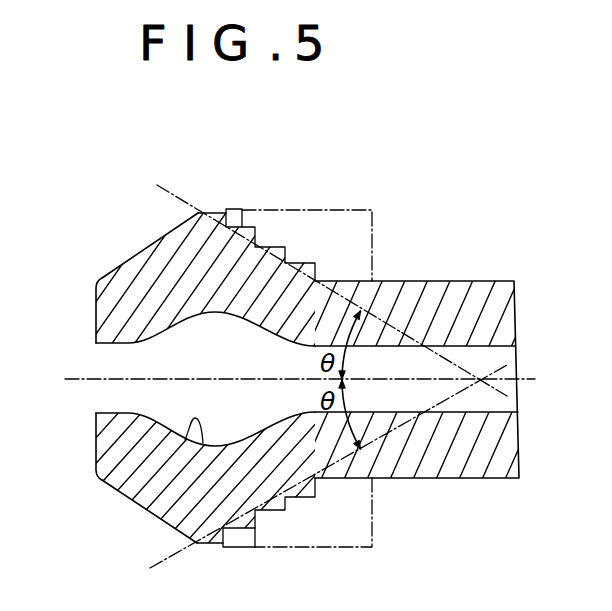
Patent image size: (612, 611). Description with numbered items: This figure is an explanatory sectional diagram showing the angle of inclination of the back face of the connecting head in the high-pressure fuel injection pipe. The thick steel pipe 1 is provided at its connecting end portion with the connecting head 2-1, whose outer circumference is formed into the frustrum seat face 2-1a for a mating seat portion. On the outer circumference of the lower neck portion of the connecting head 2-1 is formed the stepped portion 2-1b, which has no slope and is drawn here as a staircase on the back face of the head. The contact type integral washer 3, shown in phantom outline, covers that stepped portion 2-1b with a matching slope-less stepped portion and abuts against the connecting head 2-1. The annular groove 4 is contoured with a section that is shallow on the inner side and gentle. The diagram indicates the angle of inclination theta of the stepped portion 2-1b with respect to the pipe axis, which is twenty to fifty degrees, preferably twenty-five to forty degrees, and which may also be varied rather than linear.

The thick steel pipe 1 is at (470, 300).
The connecting head 2-1 is at (110, 277).
The seat face 2-1a is at (158, 237).
The stepped portion 2-1b is at (242, 228).
The washer 3 is at (325, 226).
The annular groove 4 is at (185, 440).